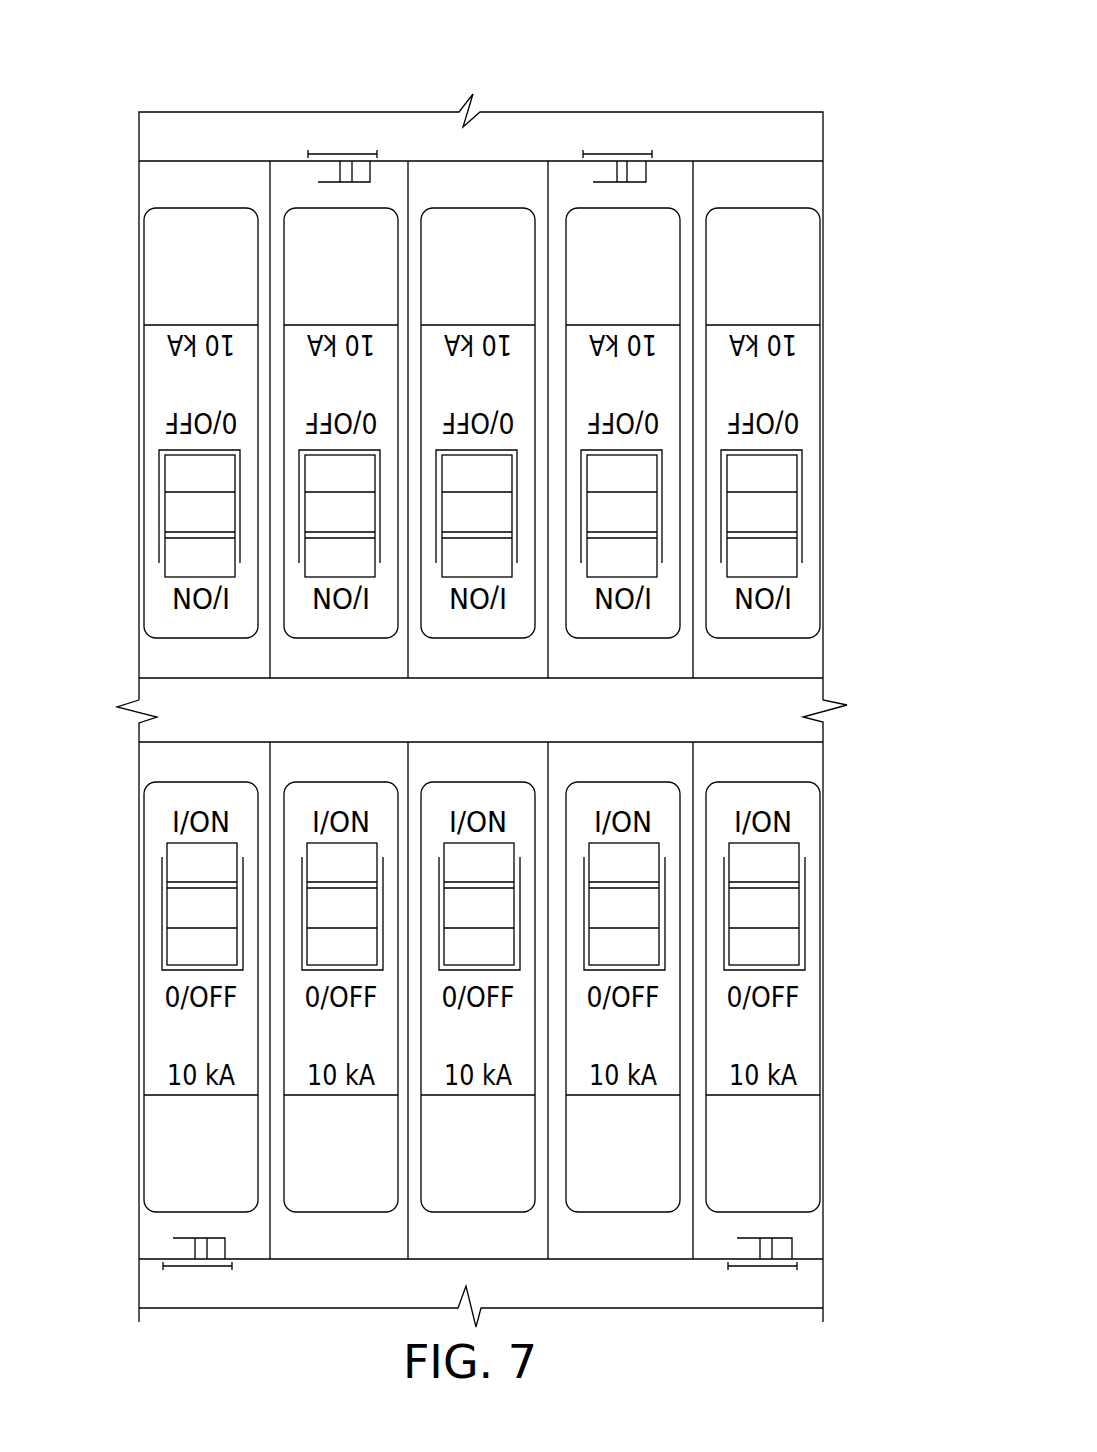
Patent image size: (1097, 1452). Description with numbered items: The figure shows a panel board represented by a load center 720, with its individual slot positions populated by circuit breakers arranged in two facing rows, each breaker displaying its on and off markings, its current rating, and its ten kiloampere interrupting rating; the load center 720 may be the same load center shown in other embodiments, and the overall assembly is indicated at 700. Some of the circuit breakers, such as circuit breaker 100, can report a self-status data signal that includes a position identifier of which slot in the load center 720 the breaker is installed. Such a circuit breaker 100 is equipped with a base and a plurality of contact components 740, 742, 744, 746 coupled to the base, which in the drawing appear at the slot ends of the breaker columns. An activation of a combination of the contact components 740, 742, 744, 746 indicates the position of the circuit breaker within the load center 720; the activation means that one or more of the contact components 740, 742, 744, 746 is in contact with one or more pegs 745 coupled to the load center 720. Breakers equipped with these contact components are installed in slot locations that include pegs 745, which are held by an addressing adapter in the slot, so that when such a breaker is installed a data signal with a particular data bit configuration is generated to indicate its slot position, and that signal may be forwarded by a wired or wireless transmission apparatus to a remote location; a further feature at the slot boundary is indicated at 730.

The circuit breaker 100 is at (163, 796).
The panelboard assembly 700 is at (500, 686).
The load center 720 is at (823, 598).
The breaker mounting slot 730 is at (303, 1213).
The contact component 740 is at (176, 1272).
The contact component 742 is at (797, 1270).
The contact component 744 is at (308, 152).
The peg 745 is at (187, 1250).
The contact component 746 is at (652, 152).